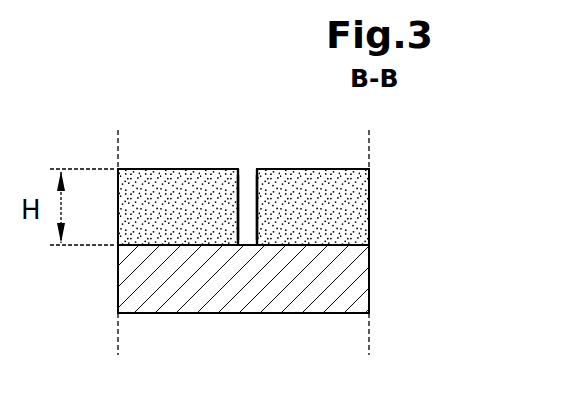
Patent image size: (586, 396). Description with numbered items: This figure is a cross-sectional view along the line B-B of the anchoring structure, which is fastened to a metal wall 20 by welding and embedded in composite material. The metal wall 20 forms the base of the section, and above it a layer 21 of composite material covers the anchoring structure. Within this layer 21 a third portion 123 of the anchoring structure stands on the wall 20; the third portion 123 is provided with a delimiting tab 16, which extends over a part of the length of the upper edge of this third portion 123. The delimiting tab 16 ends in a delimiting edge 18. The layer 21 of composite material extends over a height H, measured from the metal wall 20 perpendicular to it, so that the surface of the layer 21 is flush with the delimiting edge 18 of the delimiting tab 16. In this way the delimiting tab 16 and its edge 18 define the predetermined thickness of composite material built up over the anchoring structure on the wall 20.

The delimiting tab 16 is at (240, 190).
The delimiting edge 18 is at (248, 170).
The metal wall 20 is at (203, 300).
The layer of composite material 21 is at (360, 196).
The third portion 123 is at (262, 208).